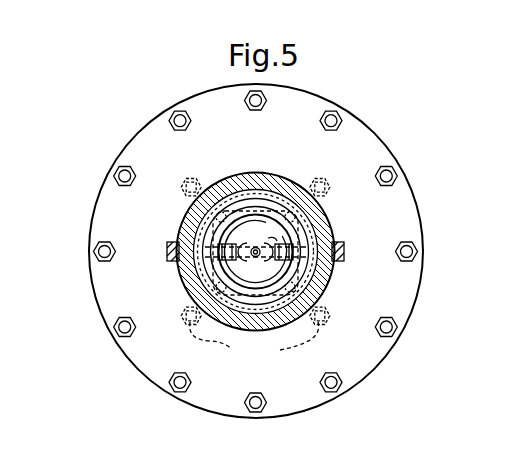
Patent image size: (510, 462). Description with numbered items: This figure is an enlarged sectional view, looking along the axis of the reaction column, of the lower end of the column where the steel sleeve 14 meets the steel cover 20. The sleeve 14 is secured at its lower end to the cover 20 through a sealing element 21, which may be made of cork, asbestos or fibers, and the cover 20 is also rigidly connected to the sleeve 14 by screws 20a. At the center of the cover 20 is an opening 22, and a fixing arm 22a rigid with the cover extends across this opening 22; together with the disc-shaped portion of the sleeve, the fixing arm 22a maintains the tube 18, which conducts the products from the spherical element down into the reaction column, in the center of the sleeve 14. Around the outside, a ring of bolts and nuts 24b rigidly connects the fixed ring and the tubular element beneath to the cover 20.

The steel cover 20 is at (256, 251).
The bolts and nuts 24b is at (116, 177).
The steel sleeve 14 is at (251, 187).
The sealing element 21 is at (330, 278).
The screws 20a is at (254, 341).
The fixing arm 22a is at (209, 266).
The opening 22 is at (214, 233).
The tube 18 is at (300, 234).